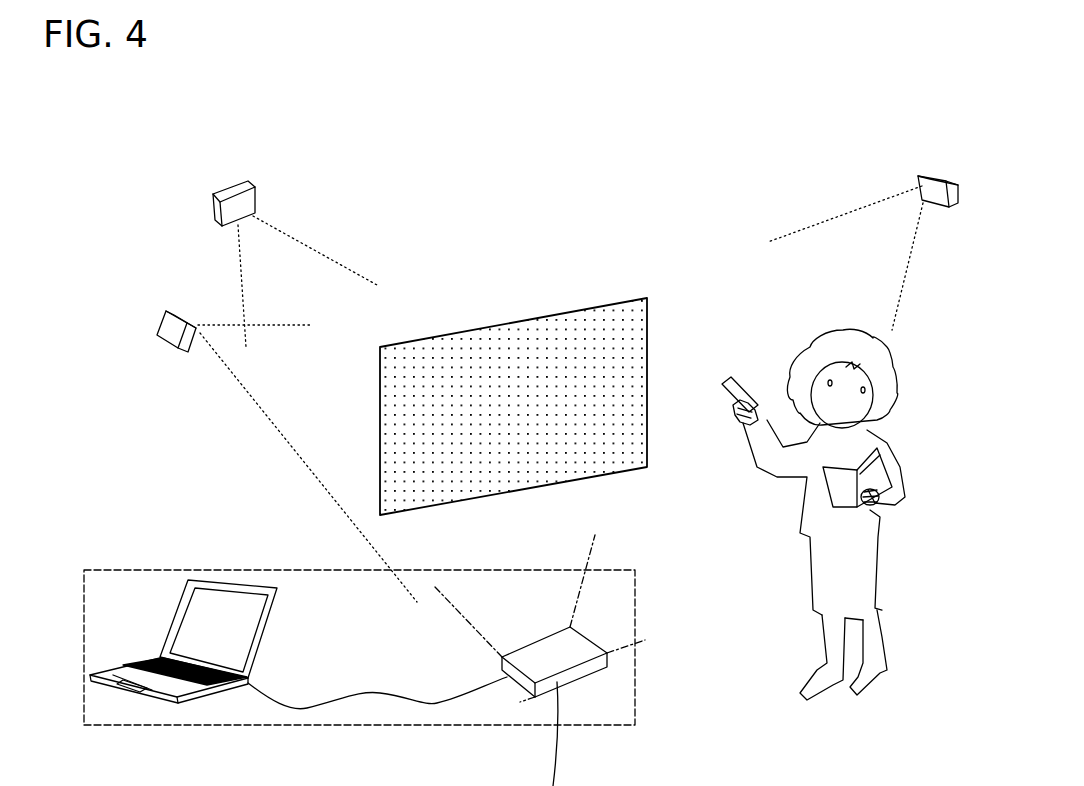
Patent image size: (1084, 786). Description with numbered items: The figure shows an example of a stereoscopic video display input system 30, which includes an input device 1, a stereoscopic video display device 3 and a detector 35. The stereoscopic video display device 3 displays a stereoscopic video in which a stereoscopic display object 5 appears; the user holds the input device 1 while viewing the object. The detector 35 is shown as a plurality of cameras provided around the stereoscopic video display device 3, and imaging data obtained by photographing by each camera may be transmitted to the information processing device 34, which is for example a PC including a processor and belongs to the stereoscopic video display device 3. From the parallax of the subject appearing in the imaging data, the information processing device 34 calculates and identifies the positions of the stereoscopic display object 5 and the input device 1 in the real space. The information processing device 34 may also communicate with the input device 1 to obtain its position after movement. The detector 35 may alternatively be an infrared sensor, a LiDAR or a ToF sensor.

The input device 1 is at (732, 378).
The stereoscopic video display device 3 is at (144, 565).
The stereoscopic display object 5 is at (527, 357).
The stereoscopic video display input system 30 is at (147, 189).
The information processing device 34 is at (218, 603).
The detector 35 is at (228, 193).